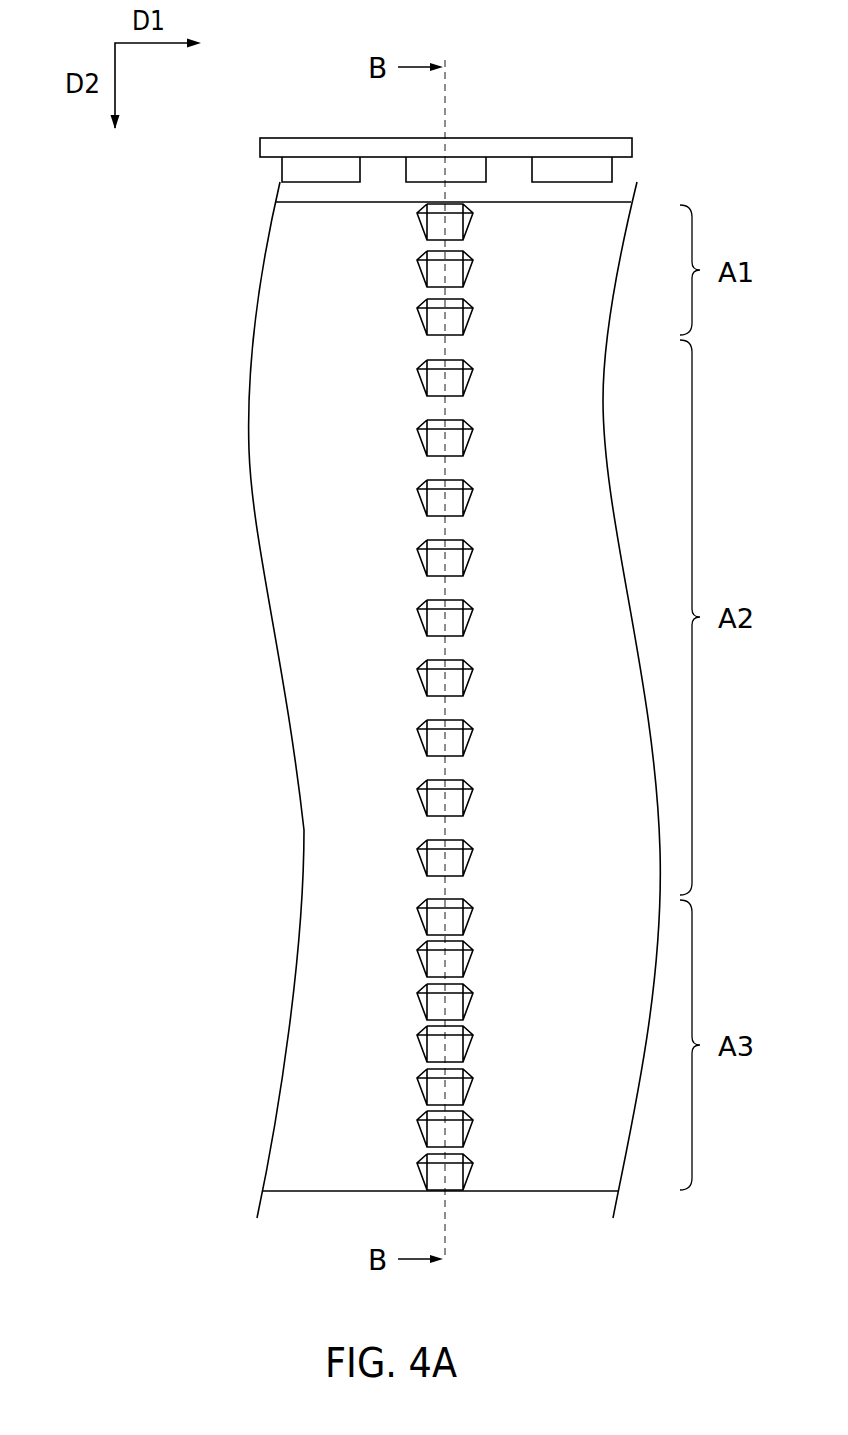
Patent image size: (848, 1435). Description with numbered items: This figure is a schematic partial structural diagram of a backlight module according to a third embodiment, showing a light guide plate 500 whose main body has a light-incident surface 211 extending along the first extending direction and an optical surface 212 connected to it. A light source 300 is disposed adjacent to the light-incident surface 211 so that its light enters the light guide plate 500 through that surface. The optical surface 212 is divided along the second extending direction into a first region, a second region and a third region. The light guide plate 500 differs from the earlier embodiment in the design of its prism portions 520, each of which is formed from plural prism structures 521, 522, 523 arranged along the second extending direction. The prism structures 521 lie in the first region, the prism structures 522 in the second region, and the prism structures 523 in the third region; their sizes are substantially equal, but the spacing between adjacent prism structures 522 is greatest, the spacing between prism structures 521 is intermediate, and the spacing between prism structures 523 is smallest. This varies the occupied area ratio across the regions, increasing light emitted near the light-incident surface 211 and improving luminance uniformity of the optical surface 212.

The light guide plate 500 is at (247, 232).
The light-incident surface 211 is at (504, 193).
The optical surface 212 is at (287, 283).
The light source 300 is at (575, 167).
The prism portions 520 is at (108, 403).
The prism structures 521 is at (412, 272).
The prism structures 522 is at (440, 622).
The prism structures 523 is at (438, 959).